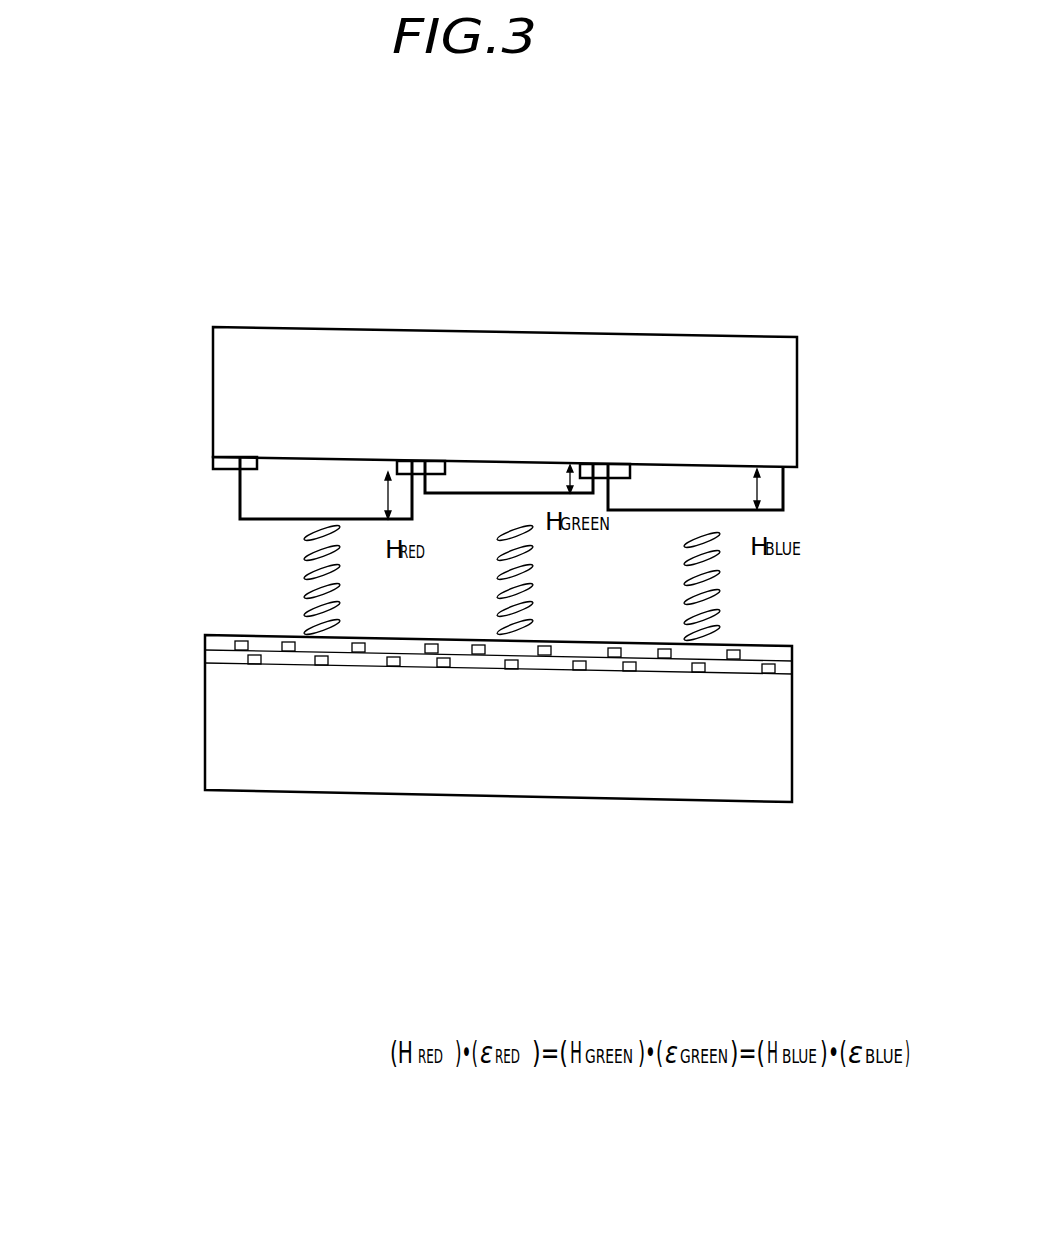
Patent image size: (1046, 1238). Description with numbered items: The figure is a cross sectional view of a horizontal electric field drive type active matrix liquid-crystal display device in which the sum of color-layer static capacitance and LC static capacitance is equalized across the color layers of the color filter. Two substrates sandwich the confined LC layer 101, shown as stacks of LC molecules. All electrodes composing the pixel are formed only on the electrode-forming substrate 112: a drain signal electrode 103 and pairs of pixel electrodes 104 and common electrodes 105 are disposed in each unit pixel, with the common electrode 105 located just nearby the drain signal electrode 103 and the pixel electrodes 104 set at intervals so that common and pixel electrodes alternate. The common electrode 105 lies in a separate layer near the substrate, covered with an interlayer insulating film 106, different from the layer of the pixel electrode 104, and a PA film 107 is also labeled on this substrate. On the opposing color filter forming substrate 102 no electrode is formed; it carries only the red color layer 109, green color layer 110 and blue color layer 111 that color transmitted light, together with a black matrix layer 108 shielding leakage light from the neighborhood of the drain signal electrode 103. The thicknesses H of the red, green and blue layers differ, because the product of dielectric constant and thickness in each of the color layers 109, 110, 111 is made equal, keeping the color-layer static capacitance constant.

The LC layer 101 is at (306, 530).
The color filter forming substrate 102 is at (223, 437).
The drain signal electrode 103 is at (612, 658).
The pixel electrode 104 is at (730, 660).
The common electrode 105 is at (695, 672).
The interlayer insulating film 106 is at (673, 666).
The PA film 107 is at (412, 652).
The black matrix layer 108 is at (413, 477).
The color layer (red) 109 is at (362, 483).
The color layer (green) 110 is at (559, 475).
The color layer (blue) 111 is at (643, 480).
The electrode-forming substrate 112 is at (275, 712).